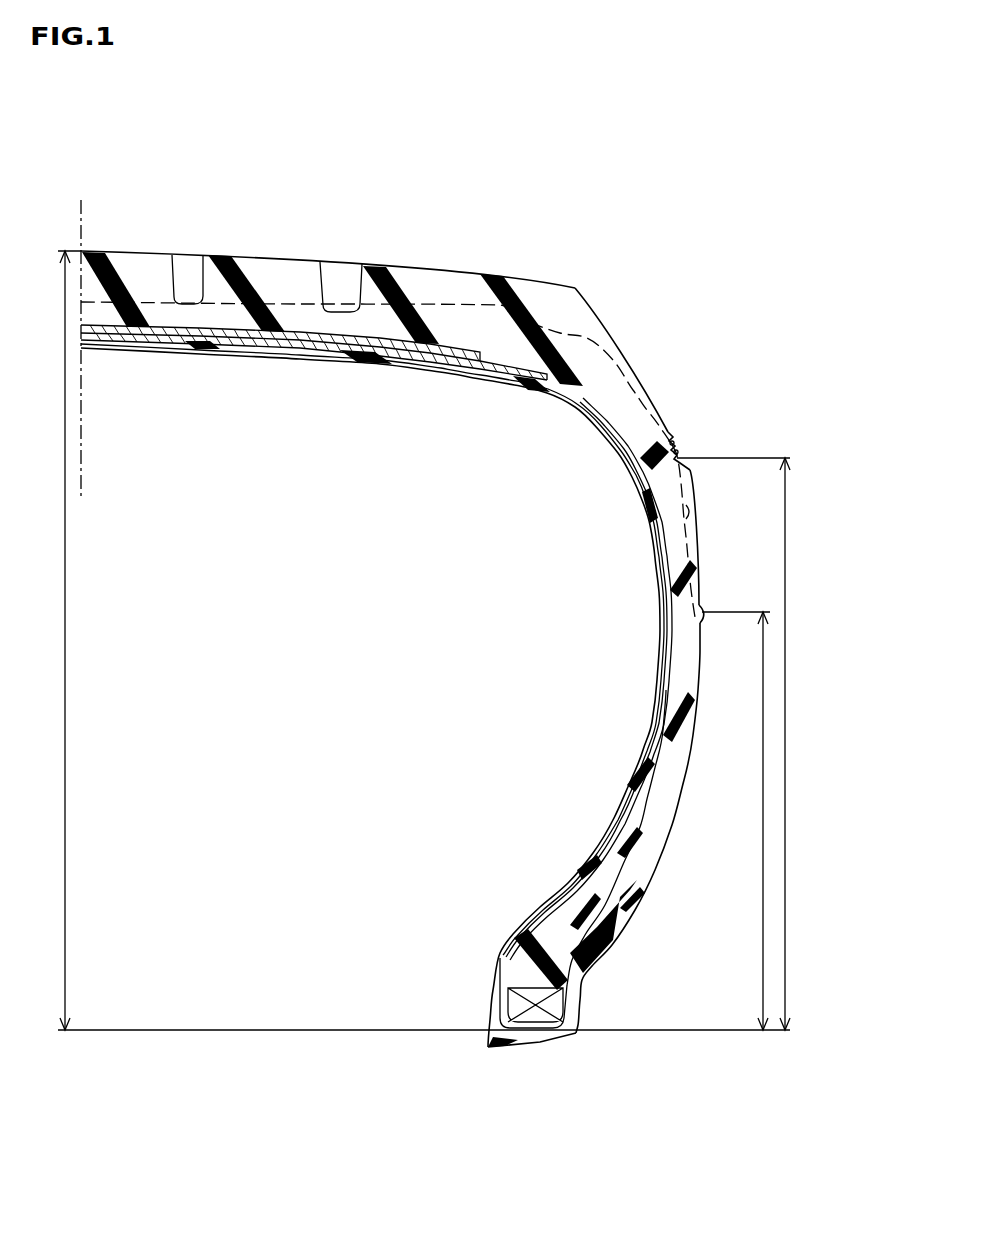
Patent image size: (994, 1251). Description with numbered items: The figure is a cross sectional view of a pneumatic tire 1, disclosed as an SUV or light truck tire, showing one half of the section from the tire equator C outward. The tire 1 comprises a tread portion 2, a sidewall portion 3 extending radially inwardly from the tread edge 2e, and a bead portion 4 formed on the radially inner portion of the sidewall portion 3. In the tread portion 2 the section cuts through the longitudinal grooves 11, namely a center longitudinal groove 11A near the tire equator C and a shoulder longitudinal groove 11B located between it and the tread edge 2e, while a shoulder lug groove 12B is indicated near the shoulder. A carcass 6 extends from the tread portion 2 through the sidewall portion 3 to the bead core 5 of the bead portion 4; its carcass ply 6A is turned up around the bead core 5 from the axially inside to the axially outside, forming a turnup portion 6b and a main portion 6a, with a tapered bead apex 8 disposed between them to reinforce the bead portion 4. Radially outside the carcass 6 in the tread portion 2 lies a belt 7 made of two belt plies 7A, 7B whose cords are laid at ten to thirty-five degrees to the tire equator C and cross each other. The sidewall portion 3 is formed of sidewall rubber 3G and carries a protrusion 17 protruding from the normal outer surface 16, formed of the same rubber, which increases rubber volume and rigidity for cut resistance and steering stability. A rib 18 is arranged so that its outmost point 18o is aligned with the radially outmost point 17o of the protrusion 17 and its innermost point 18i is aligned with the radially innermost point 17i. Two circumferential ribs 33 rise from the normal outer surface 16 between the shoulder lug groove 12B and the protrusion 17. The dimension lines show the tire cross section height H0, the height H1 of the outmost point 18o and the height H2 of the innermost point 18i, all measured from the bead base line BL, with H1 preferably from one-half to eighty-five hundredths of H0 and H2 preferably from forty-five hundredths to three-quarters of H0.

The pneumatic tire 1 is at (553, 213).
The tread portion 2 is at (460, 265).
The tread edge 2e is at (587, 300).
The sidewall portion 3 is at (697, 692).
The sidewall rubber 3G is at (663, 793).
The bead portion 4 is at (598, 1003).
The bead core 5 is at (517, 1005).
The carcass 6 is at (562, 722).
The carcass ply 6A is at (562, 722).
The main portion 6a is at (667, 687).
The turnup portion 6b is at (662, 722).
The belt 7 is at (314, 421).
The belt ply 7A is at (176, 335).
The belt ply 7B is at (262, 335).
The bead apex 8 is at (565, 937).
The longitudinal grooves 11 is at (266, 217).
The center longitudinal groove 11A is at (200, 268).
The shoulder longitudinal groove 11B is at (339, 238).
The shoulder lug groove 12B is at (596, 332).
The normal outer surface 16 is at (688, 512).
The protrusion 17 is at (743, 506).
The rib 18 is at (703, 492).
The radially outmost point of the protrusion 17o is at (726, 394).
The outmost point of the rib 18o is at (678, 457).
The radially innermost point of the protrusion 17i is at (610, 625).
The radially innermost point of the rib 18i is at (700, 617).
The circumferential rib 33 is at (672, 450).
The tire cross section height H0 is at (63, 640).
The height of the rib at the outmost point H1 is at (740, 744).
The height of the rib at the innermost point H2 is at (741, 821).
The tire equator C is at (82, 337).
The bead base line BL is at (270, 1030).